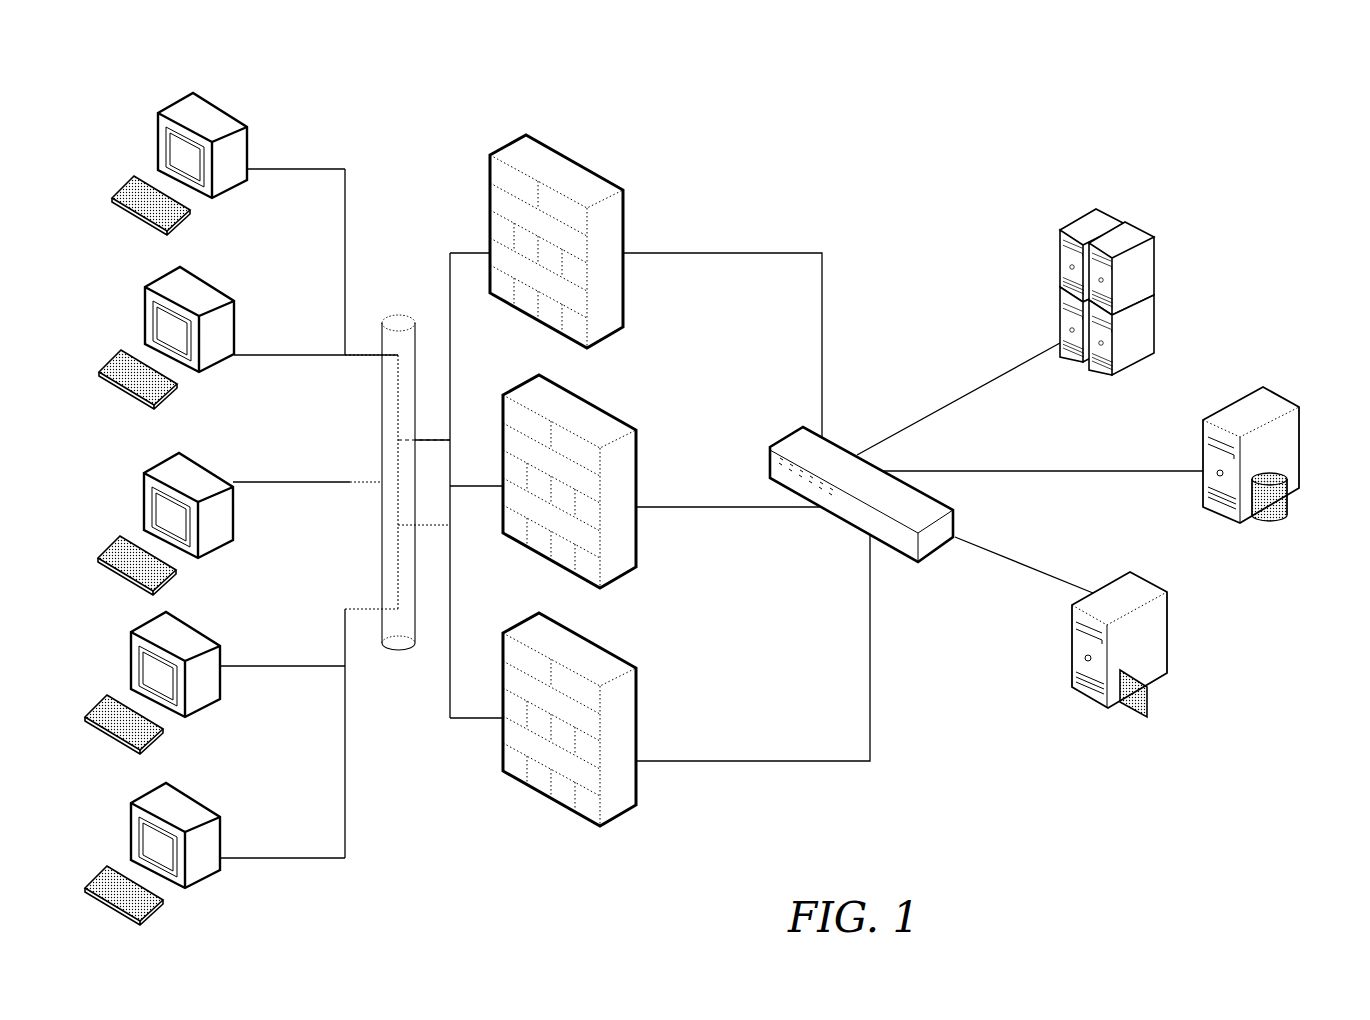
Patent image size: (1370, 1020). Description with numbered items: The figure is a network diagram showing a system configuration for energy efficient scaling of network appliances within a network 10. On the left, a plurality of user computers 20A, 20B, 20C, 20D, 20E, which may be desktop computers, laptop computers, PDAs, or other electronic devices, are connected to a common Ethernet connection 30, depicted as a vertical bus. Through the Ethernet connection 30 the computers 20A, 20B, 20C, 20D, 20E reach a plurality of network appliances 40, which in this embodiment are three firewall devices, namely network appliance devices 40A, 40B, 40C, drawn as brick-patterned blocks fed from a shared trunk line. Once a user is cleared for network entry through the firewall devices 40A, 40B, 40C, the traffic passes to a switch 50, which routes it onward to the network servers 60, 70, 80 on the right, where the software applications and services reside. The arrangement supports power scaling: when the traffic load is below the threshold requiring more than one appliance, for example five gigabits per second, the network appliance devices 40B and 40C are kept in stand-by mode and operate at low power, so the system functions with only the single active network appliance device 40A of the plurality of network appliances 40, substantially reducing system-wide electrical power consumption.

The network 10 is at (1352, 125).
The computer 20A is at (208, 102).
The computer 20B is at (197, 278).
The computer 20C is at (191, 472).
The computer 20D is at (181, 636).
The client computer 20E is at (177, 803).
The Ethernet connection 30 is at (398, 337).
The plurality of network appliances 40 is at (770, 317).
The network appliance device 40A is at (568, 172).
The network appliance device 40B is at (613, 426).
The network appliance device 40C is at (617, 668).
The switch 50 is at (932, 508).
The network server 60 is at (1135, 233).
The network server 70 is at (1270, 397).
The network server 80 is at (1132, 588).